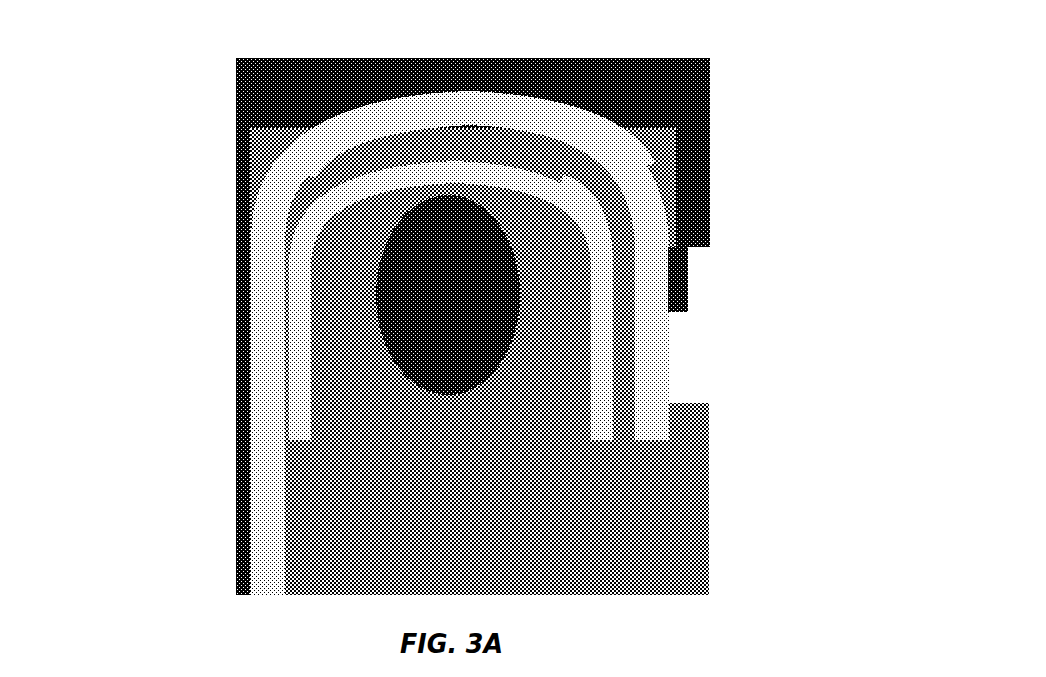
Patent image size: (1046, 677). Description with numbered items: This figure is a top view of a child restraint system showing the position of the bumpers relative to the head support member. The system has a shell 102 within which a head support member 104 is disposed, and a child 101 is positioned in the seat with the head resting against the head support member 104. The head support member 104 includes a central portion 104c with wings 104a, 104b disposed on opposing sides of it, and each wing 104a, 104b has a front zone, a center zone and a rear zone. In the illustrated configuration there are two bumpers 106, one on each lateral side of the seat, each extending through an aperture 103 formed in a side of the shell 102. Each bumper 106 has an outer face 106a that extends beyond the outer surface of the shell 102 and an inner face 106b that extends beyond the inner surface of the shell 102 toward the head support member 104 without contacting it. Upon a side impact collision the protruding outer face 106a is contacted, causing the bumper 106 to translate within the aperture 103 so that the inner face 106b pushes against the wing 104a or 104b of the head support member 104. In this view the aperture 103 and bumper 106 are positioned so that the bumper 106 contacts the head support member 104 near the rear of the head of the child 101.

The child 101 is at (420, 318).
The shell 102 is at (240, 220).
The aperture 103 is at (688, 245).
The head support member 104 is at (535, 215).
The wing 104a is at (290, 370).
The wing 104b is at (600, 379).
The central portion 104c is at (455, 150).
The bumper 106 is at (270, 262).
The outer face 106a is at (688, 257).
The inner face 106b is at (660, 292).